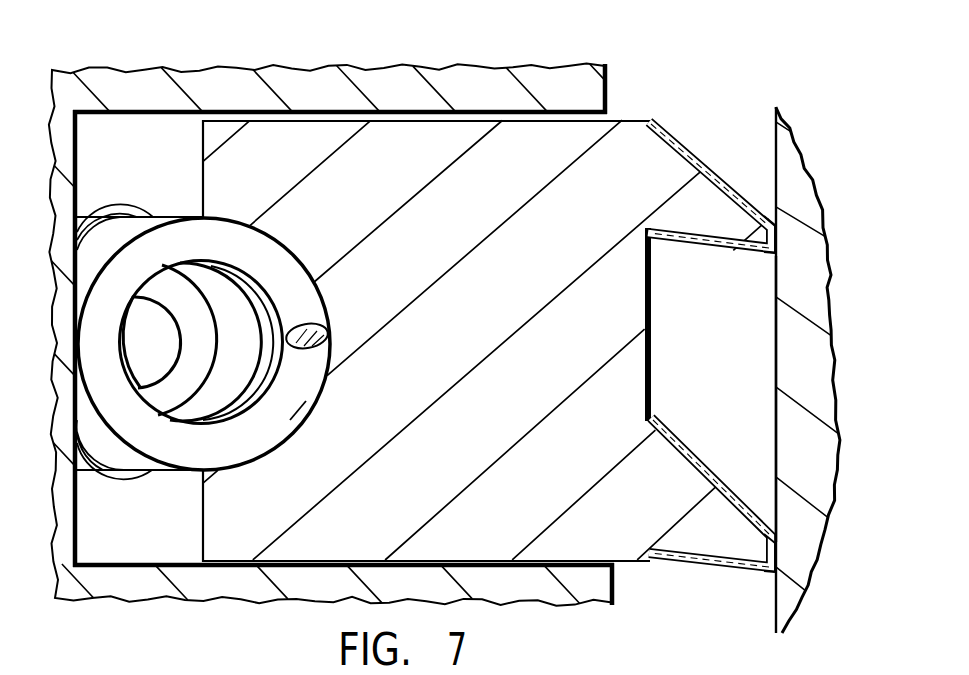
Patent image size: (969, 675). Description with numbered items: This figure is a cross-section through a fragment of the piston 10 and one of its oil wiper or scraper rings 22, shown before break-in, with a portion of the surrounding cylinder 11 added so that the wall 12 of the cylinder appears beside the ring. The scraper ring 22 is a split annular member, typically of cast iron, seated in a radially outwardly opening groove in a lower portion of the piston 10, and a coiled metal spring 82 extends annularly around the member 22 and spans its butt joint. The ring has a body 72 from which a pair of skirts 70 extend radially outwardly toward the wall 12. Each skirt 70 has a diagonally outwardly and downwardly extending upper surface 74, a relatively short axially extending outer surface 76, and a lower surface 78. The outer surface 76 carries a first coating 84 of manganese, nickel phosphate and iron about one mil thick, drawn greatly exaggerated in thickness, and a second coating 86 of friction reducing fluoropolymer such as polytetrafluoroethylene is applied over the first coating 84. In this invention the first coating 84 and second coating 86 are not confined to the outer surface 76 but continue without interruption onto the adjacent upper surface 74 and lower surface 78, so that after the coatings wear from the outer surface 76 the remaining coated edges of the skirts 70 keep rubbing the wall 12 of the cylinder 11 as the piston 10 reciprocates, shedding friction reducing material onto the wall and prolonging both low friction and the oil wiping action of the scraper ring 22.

The piston 10 is at (570, 80).
The scraper ring 22 is at (633, 130).
The coiled metal spring 82 is at (303, 252).
The body 72 is at (652, 372).
The skirts 70 is at (660, 162).
The upper surface 74 is at (720, 172).
The lower surface 78 is at (692, 242).
The outer surface 76 is at (777, 238).
The first coating 84 is at (777, 232).
The second coating 86 is at (777, 252).
The cylinder 11 is at (805, 367).
The wall 12 is at (776, 433).